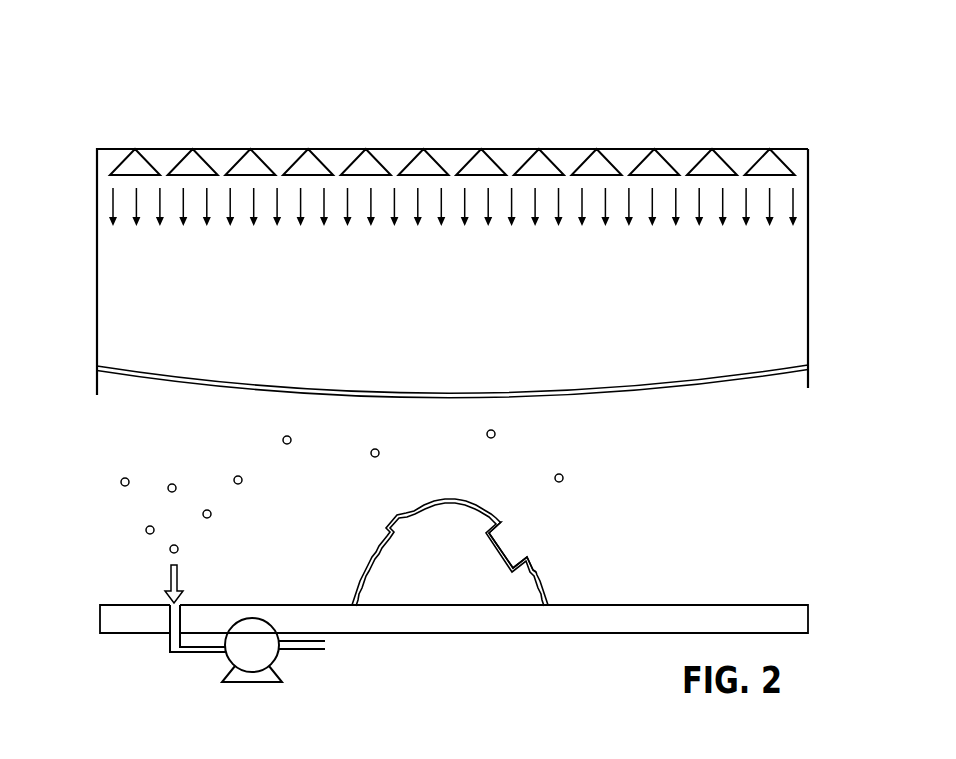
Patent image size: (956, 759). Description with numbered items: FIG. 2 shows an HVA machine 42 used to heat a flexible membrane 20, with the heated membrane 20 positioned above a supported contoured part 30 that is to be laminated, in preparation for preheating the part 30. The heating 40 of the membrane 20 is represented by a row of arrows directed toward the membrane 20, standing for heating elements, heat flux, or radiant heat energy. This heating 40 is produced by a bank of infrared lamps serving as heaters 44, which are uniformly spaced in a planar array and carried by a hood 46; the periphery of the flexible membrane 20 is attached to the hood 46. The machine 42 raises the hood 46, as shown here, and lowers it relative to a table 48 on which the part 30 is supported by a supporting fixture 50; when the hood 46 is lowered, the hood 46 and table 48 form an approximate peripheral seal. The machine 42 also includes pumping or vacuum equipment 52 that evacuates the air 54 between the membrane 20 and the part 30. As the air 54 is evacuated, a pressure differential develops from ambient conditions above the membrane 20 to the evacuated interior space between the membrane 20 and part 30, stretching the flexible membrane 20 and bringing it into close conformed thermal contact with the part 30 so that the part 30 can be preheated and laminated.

The flexible membrane 20 is at (230, 390).
The part 30 is at (388, 533).
The heating 40 is at (793, 207).
The HVA machine 42 is at (813, 115).
The heaters 44 is at (422, 158).
The hood 46 is at (812, 292).
The table 48 is at (330, 605).
The supporting fixture 50 is at (545, 582).
The pumping or vacuum equipment 52 is at (227, 665).
The air 54 is at (120, 522).